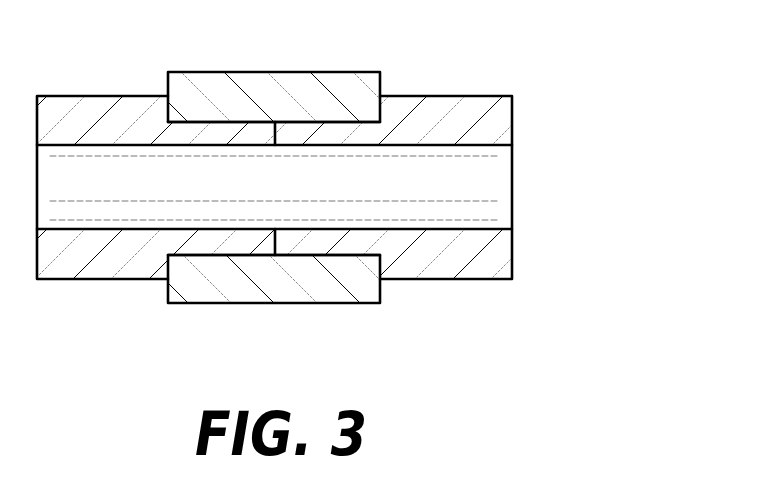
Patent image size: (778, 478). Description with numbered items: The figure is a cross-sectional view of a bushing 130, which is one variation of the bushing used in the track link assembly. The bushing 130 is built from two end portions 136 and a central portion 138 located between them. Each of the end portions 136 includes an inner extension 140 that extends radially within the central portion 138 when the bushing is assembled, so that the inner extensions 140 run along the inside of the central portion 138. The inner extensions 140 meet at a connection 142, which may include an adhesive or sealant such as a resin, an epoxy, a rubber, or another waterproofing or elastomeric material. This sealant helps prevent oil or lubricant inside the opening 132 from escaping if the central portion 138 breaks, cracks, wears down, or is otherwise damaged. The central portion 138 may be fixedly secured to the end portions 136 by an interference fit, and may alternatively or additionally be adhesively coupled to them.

The bushing 130 is at (332, 193).
The opening 132 is at (493, 180).
The end portions 136 is at (80, 96).
The central portion 138 is at (318, 72).
The inner extensions 140 is at (222, 130).
The connection 142 is at (277, 127).